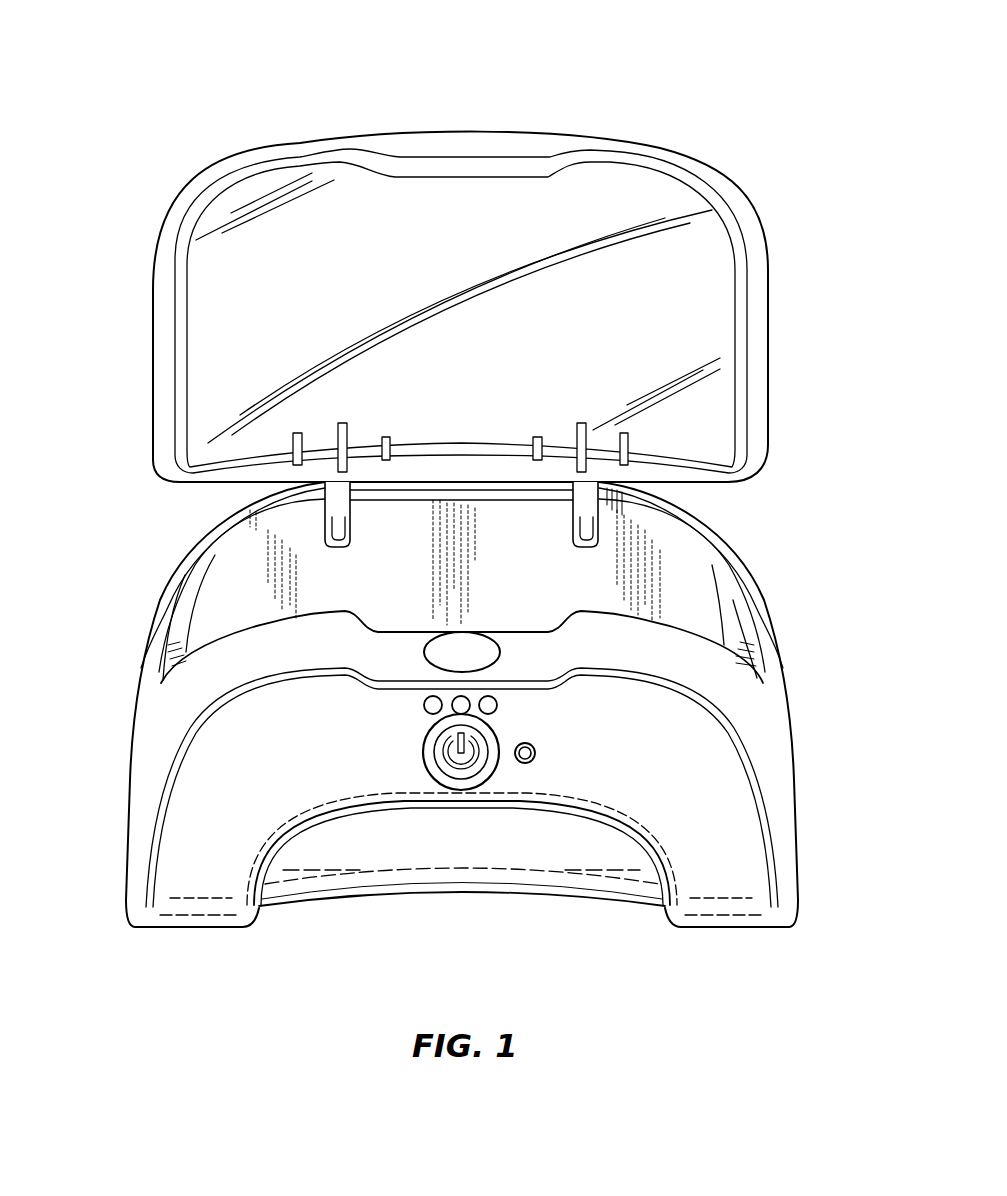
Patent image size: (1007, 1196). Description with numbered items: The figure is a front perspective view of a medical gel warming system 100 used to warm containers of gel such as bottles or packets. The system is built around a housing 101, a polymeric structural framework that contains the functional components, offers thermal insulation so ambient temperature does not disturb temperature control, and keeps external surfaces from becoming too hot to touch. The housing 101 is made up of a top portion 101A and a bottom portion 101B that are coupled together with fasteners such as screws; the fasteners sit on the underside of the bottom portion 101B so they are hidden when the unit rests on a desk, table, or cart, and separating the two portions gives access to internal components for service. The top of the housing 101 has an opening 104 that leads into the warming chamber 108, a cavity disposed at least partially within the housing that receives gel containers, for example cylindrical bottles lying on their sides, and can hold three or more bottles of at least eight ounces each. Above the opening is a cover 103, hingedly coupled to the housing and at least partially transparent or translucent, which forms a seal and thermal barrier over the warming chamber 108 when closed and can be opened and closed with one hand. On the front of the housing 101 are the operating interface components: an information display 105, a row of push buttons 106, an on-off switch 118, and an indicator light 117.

The medical gel warming system 100 is at (450, 503).
The housing 101 is at (441, 736).
The top portion 101A is at (145, 735).
The bottom portion 101B is at (200, 907).
The cover 103 is at (498, 137).
The opening 104 is at (224, 586).
The information display 105 is at (420, 666).
The push buttons 106 is at (421, 720).
The warming chamber 108 is at (675, 588).
The indicator light 117 is at (532, 763).
The on-off switch 118 is at (463, 770).